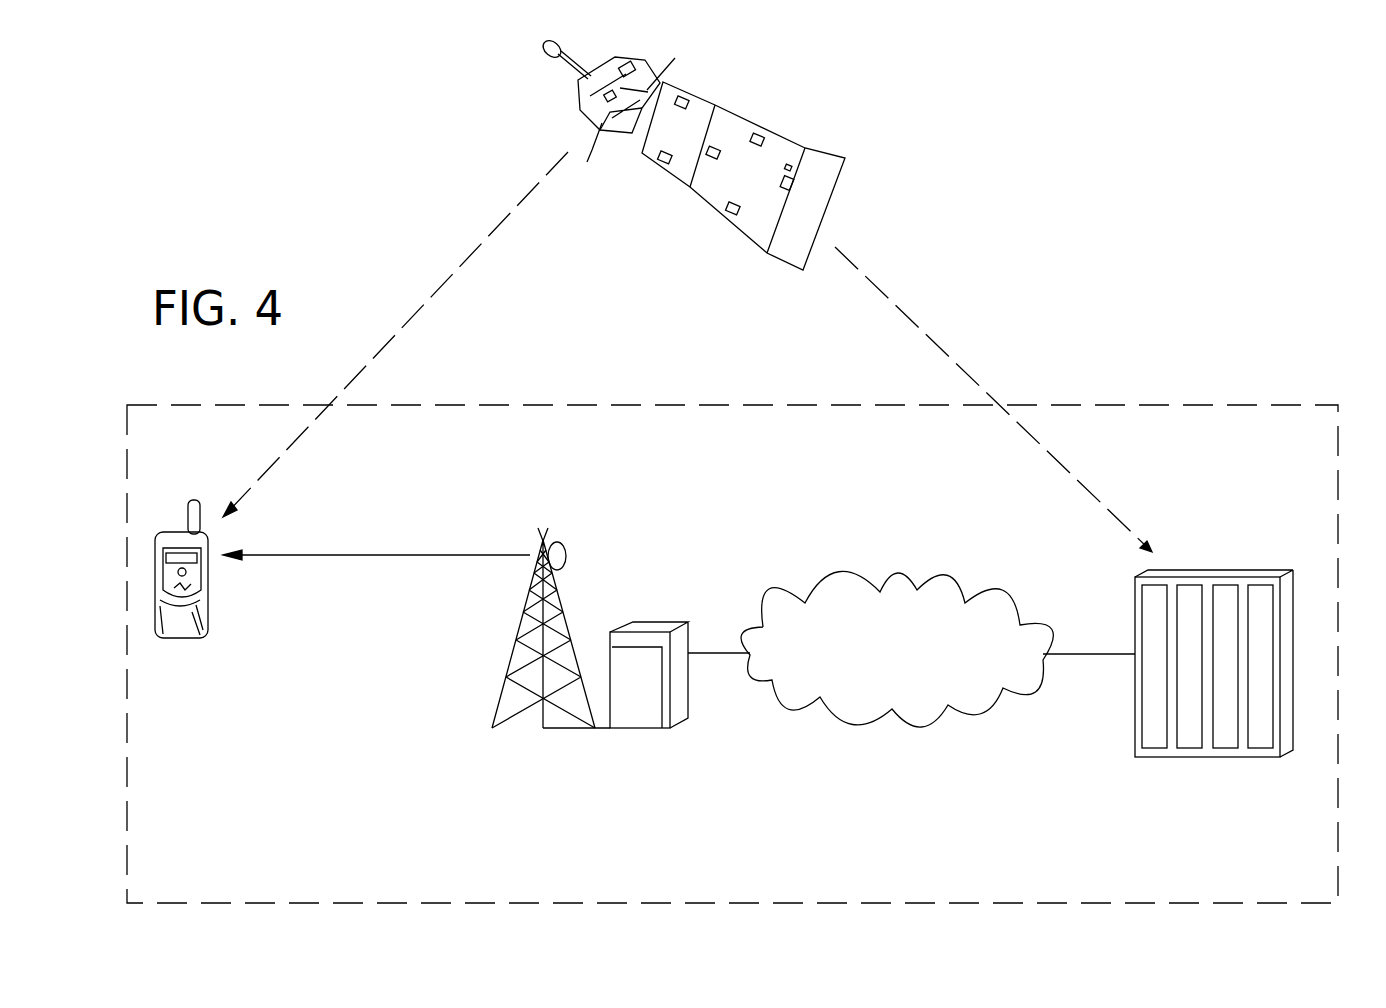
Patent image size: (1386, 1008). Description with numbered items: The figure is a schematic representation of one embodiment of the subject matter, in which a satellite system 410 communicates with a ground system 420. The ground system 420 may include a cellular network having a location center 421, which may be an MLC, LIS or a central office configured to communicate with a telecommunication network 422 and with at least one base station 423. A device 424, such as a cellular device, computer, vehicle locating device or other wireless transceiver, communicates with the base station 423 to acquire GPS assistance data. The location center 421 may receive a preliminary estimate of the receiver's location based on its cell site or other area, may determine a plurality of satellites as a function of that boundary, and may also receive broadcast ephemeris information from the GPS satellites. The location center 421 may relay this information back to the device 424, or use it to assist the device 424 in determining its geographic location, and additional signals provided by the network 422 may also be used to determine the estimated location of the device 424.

The satellite system 410 is at (870, 212).
The ground system 420 is at (1163, 406).
The location center 421 is at (1195, 553).
The telecommunication network 422 is at (858, 587).
The base station 423 is at (560, 532).
The device 424 is at (175, 517).